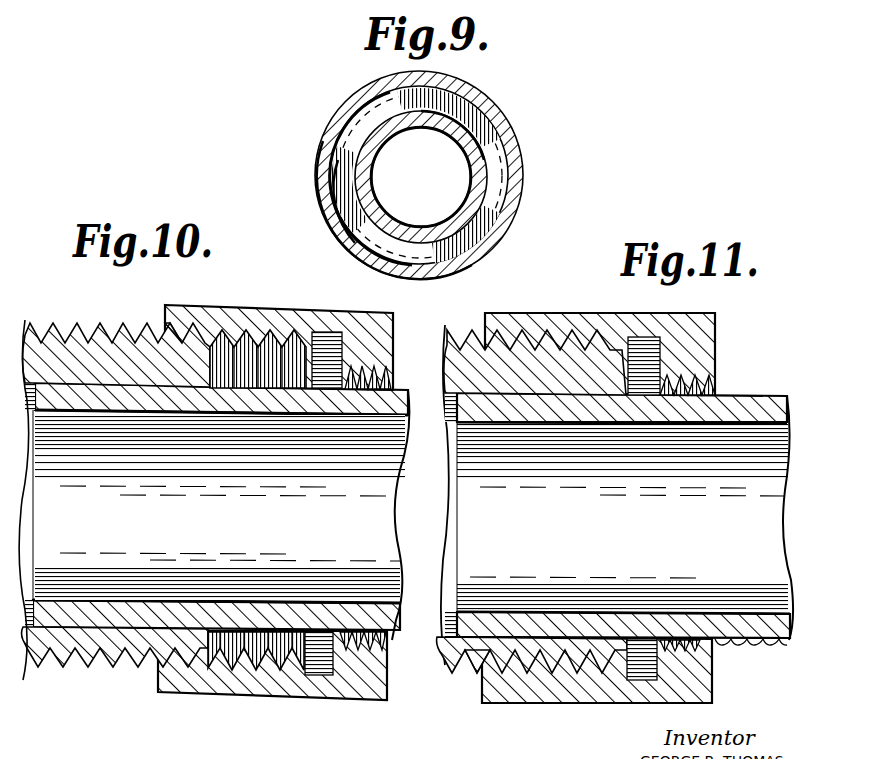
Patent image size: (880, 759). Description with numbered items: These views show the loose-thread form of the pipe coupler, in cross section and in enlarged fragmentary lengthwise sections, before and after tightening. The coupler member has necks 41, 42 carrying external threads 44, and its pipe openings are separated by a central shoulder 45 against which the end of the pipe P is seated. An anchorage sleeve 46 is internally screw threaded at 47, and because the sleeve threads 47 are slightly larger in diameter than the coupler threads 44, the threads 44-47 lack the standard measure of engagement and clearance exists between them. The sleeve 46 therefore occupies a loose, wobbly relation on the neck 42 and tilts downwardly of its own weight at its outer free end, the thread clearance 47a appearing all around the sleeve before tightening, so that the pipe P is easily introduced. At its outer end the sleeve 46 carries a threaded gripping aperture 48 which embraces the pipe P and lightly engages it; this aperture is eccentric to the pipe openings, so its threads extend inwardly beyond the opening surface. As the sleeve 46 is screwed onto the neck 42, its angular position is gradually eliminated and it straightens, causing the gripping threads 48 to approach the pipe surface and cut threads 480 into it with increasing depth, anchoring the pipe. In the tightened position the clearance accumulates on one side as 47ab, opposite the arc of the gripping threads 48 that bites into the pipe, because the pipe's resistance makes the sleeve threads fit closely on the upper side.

In FIG. 9, the pipe P is at (431, 127).
In FIG. 10, the pipe P is at (177, 398).
In FIG. 11, the pipe P is at (463, 513).
In FIG. 10, the neck 41 is at (58, 345).
In FIG. 9, the neck 42 is at (493, 149).
In FIG. 11, the neck 42 is at (542, 383).
In FIG. 10, the external threads 44 is at (88, 345).
In FIG. 11, the external threads 44 is at (463, 336).
In FIG. 9, the threads 44-47 is at (492, 125).
In FIG. 10, the central shoulder 45 is at (33, 612).
In FIG. 11, the central shoulder 45 is at (460, 612).
In FIG. 9, the anchorage sleeve 46 is at (485, 100).
In FIG. 10, the anchorage sleeve 46 is at (258, 317).
In FIG. 11, the anchorage sleeve 46 is at (617, 321).
In FIG. 10, the internal screw threads 47 is at (270, 345).
In FIG. 11, the internal screw threads 47 is at (553, 338).
In FIG. 10, the thread clearance 47a is at (175, 342).
In FIG. 11, the accumulated thread clearance 47ab is at (520, 703).
In FIG. 10, the threaded gripping aperture 48 is at (380, 368).
In FIG. 11, the threaded gripping aperture 48 is at (716, 386).
In FIG. 11, the cut threads 480 is at (772, 641).